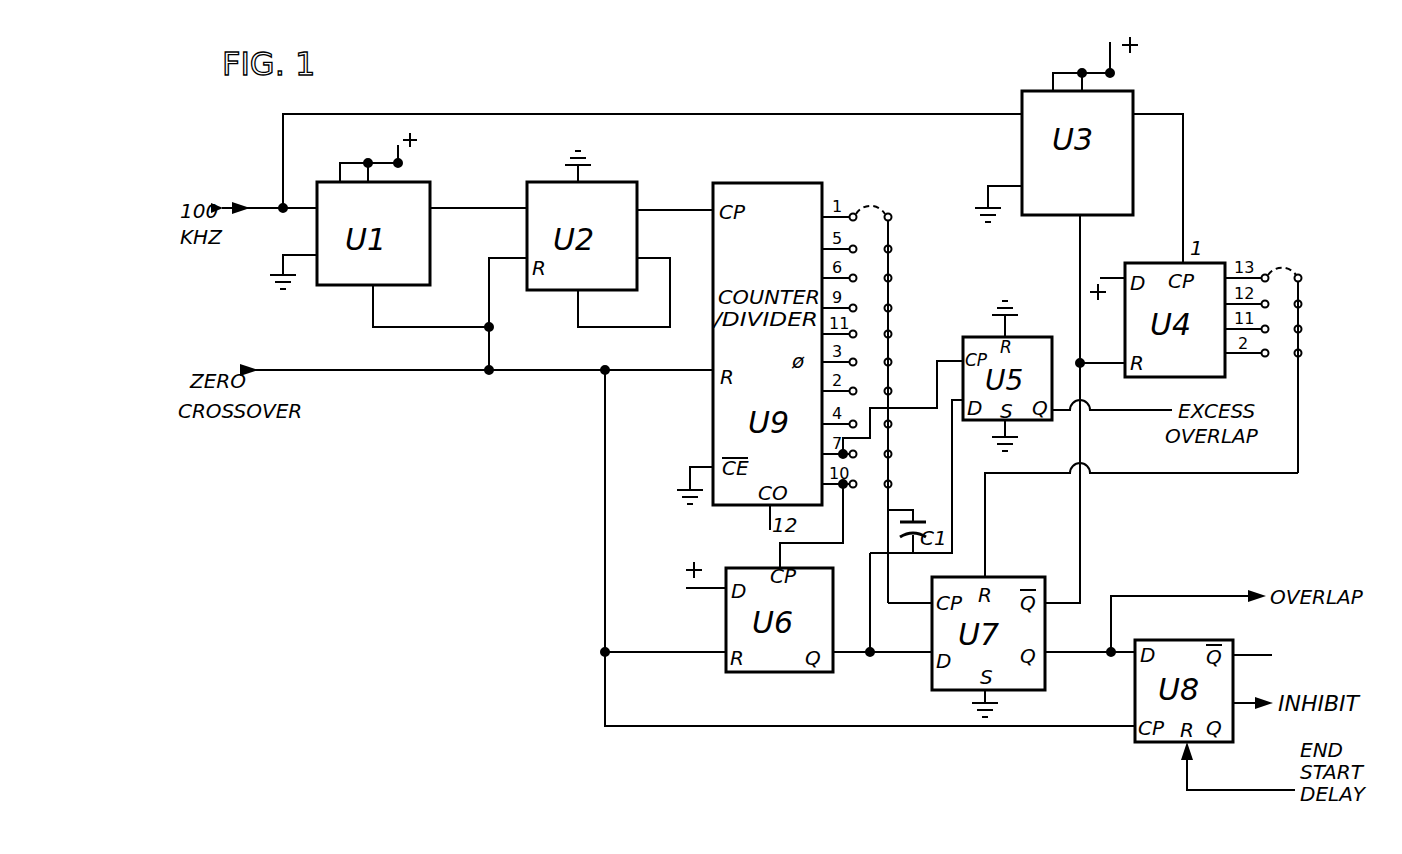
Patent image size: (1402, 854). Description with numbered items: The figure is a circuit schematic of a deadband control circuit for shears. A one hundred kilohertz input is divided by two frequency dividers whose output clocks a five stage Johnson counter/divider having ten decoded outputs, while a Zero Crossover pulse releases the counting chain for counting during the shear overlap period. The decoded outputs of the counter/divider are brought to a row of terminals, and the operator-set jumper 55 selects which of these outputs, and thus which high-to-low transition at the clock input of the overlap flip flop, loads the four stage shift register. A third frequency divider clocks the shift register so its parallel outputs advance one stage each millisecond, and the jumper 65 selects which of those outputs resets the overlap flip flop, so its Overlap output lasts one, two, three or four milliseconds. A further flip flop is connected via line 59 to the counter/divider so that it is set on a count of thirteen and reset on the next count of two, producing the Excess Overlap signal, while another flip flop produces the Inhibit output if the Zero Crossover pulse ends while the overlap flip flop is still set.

The jumper 55 is at (871, 203).
The line 59 is at (893, 232).
The jumper 65 is at (1282, 266).